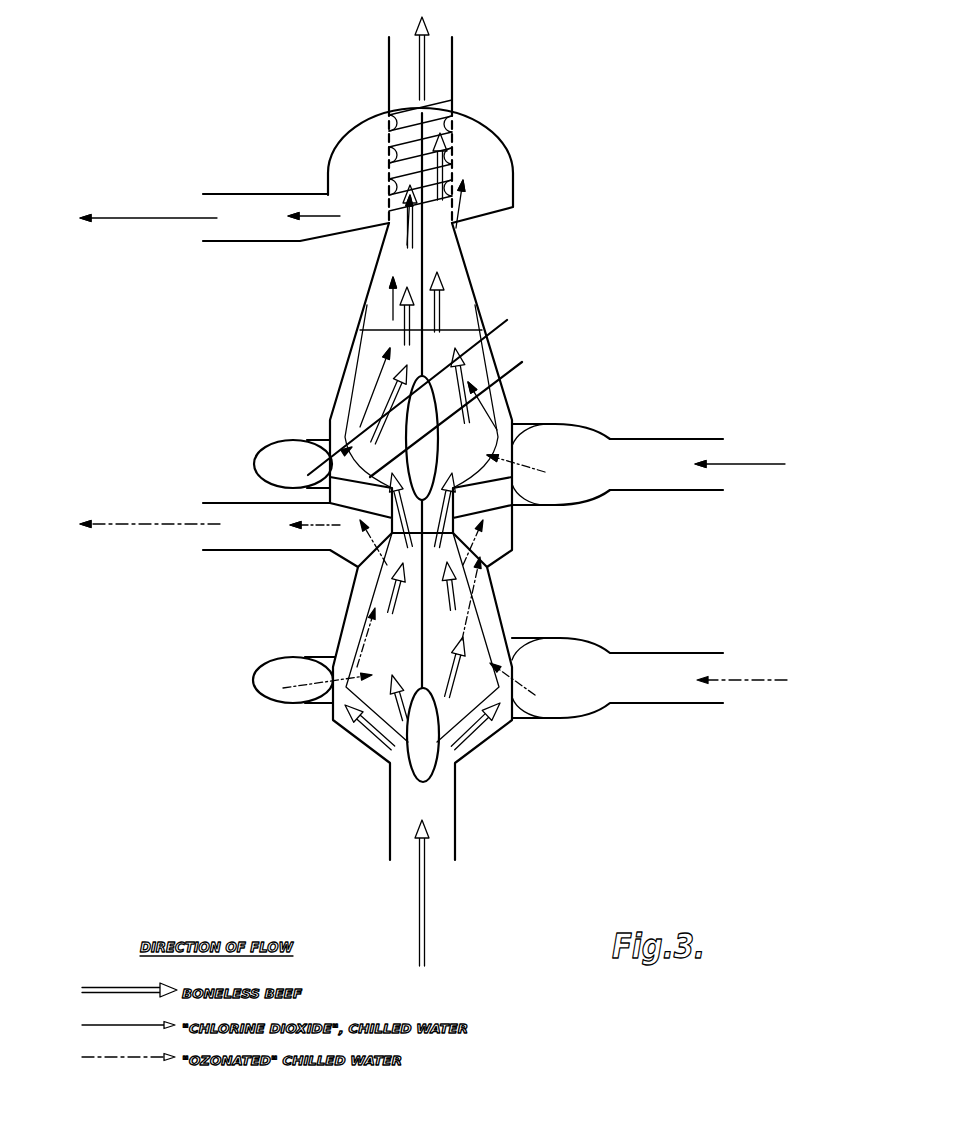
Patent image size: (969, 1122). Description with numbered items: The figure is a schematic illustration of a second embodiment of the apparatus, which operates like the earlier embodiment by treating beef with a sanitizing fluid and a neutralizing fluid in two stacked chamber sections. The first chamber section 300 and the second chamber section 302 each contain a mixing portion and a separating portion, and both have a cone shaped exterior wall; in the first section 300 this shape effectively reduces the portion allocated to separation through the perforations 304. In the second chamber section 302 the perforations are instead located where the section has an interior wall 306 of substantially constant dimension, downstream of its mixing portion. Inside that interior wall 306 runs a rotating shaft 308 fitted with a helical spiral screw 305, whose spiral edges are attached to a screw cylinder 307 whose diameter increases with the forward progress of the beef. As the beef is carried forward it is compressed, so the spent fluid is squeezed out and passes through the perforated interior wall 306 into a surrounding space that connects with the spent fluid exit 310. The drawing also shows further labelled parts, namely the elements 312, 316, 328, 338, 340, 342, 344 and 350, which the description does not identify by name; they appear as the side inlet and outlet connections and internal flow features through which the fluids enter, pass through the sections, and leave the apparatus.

The first chamber section 300 is at (618, 587).
The second chamber section 302 is at (523, 375).
The perforations 304 is at (455, 546).
The helical spiral screw 305 is at (452, 100).
The interior wall 306 is at (460, 178).
The screw cylinder 307 is at (452, 108).
The rotating shaft 308 is at (747, 683).
The spent fluid exit 310 is at (507, 185).
The lower left inlet 312 is at (285, 698).
The ozonated water outlet 316 is at (142, 498).
The chlorine dioxide chilled water inlet 328 is at (745, 463).
The chlorine dioxide water outlet 338 is at (142, 217).
The inclined baffle 340 is at (452, 348).
The right inlet bulb 342 is at (635, 438).
The left inlet bulb 344 is at (293, 458).
The upper funnel 350 is at (467, 273).